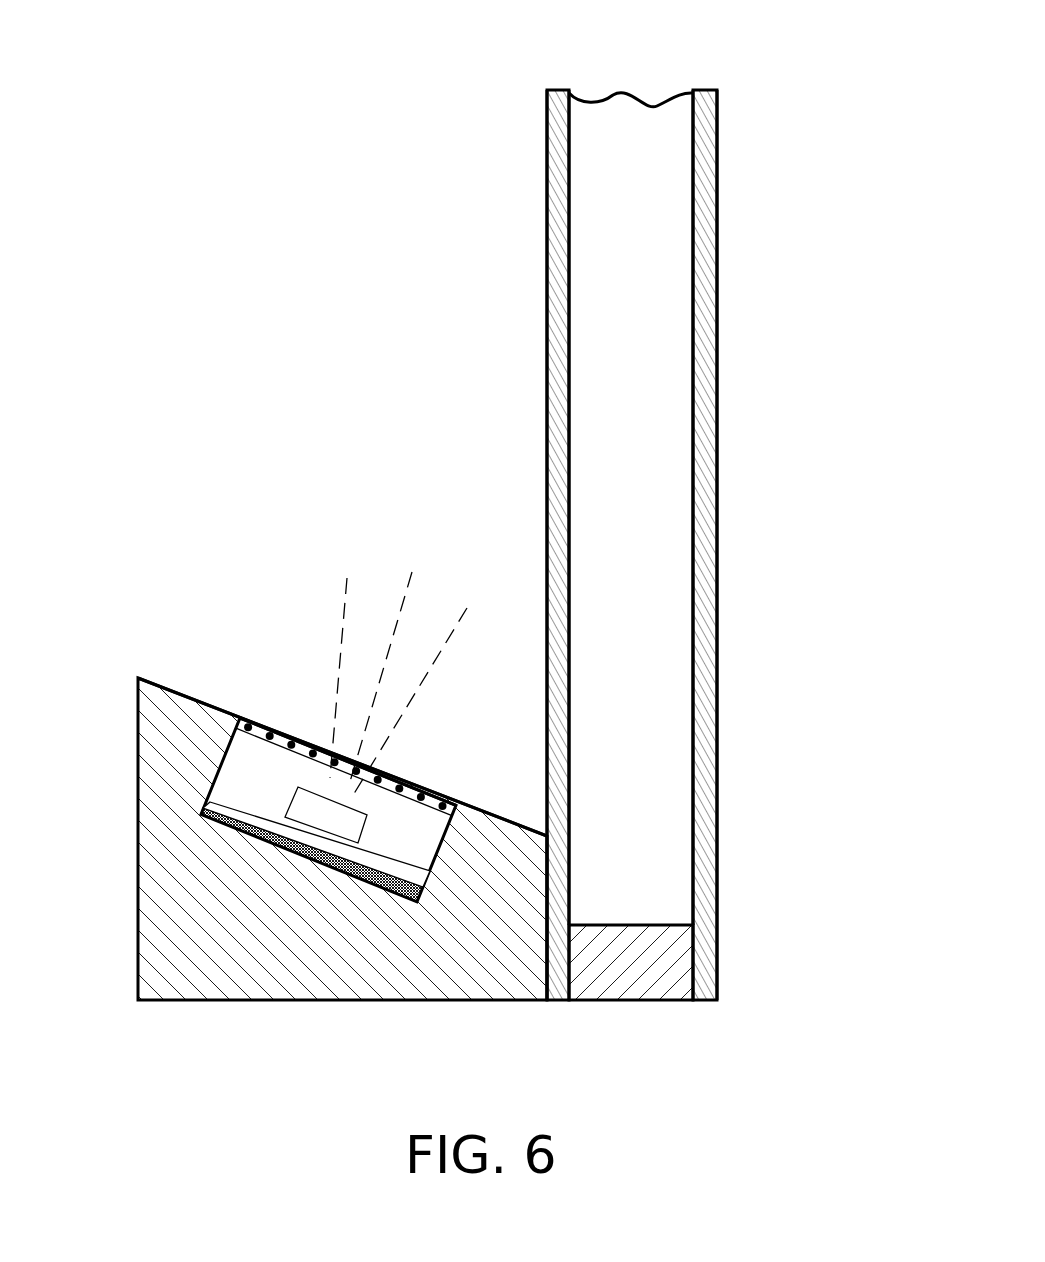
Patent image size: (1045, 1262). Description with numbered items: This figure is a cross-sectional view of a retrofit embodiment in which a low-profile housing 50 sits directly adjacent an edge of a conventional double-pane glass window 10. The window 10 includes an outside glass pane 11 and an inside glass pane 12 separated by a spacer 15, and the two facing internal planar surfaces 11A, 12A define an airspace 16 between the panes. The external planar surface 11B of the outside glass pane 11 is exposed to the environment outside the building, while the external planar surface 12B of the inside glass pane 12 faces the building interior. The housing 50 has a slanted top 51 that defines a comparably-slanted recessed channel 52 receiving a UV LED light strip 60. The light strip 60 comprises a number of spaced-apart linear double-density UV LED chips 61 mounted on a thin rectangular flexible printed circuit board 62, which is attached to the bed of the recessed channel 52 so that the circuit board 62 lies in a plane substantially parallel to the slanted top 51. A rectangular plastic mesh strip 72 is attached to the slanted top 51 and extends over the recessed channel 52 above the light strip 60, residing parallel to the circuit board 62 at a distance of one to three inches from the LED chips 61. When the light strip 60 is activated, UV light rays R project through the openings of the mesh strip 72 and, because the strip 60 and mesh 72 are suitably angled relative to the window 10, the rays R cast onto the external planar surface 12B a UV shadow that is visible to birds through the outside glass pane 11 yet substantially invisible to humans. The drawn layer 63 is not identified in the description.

The double-pane window 10 is at (745, 104).
The outside glass pane 11 is at (705, 170).
The internal planar surface of outside glass pane 11A is at (693, 530).
The external planar surface of outside glass pane 11B is at (717, 365).
The inside glass pane 12 is at (550, 224).
The internal planar surface of inside glass pane 12A is at (570, 443).
The external planar surface of inside glass pane 12B is at (545, 355).
The spacer 15 is at (631, 995).
The airspace 16 is at (652, 322).
The housing 50 is at (140, 813).
The slanted top 51 is at (163, 683).
The recessed channel 52 is at (249, 722).
The UV LED light strip 60 is at (262, 742).
The UV LED chip 61 is at (353, 815).
The flexible printed circuit board 62 is at (388, 853).
The heat dissipation layer 63 is at (238, 806).
The plastic mesh strip 72 is at (297, 730).
The UV light rays R is at (343, 595).